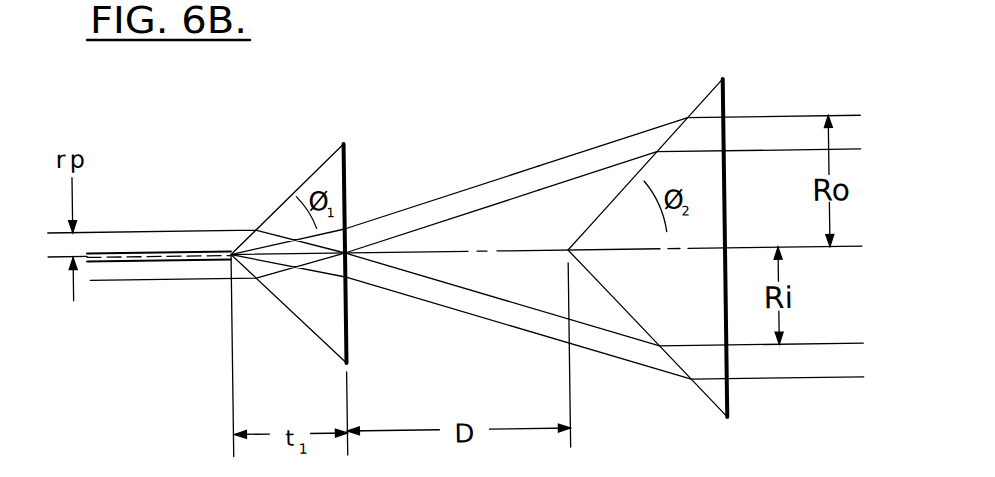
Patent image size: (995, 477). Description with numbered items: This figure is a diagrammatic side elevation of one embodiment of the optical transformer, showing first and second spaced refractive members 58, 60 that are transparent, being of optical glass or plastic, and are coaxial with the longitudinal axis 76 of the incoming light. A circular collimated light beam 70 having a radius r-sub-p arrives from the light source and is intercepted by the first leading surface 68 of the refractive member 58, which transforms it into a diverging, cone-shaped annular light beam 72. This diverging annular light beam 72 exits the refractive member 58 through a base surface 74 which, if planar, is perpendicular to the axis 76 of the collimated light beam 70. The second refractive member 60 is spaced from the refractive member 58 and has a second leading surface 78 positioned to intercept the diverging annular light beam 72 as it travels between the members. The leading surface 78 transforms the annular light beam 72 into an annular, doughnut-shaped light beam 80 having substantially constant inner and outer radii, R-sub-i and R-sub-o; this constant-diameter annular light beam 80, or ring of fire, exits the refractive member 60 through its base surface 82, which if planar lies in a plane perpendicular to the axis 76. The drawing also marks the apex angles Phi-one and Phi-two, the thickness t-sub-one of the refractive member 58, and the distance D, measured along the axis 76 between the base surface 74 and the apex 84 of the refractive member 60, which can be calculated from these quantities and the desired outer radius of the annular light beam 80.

The first refractive member 58 is at (329, 157).
The second refractive member 60 is at (674, 169).
The first leading surface 68 is at (272, 208).
The circular collimated light beam 70 is at (143, 244).
The diverging annular light beam 72 is at (463, 205).
The base surface 74 is at (346, 175).
The axis 76 is at (452, 251).
The second leading surface 78 is at (607, 205).
The annular light beam 80 is at (788, 133).
The base surface 82 is at (727, 102).
The apex 84 is at (568, 251).